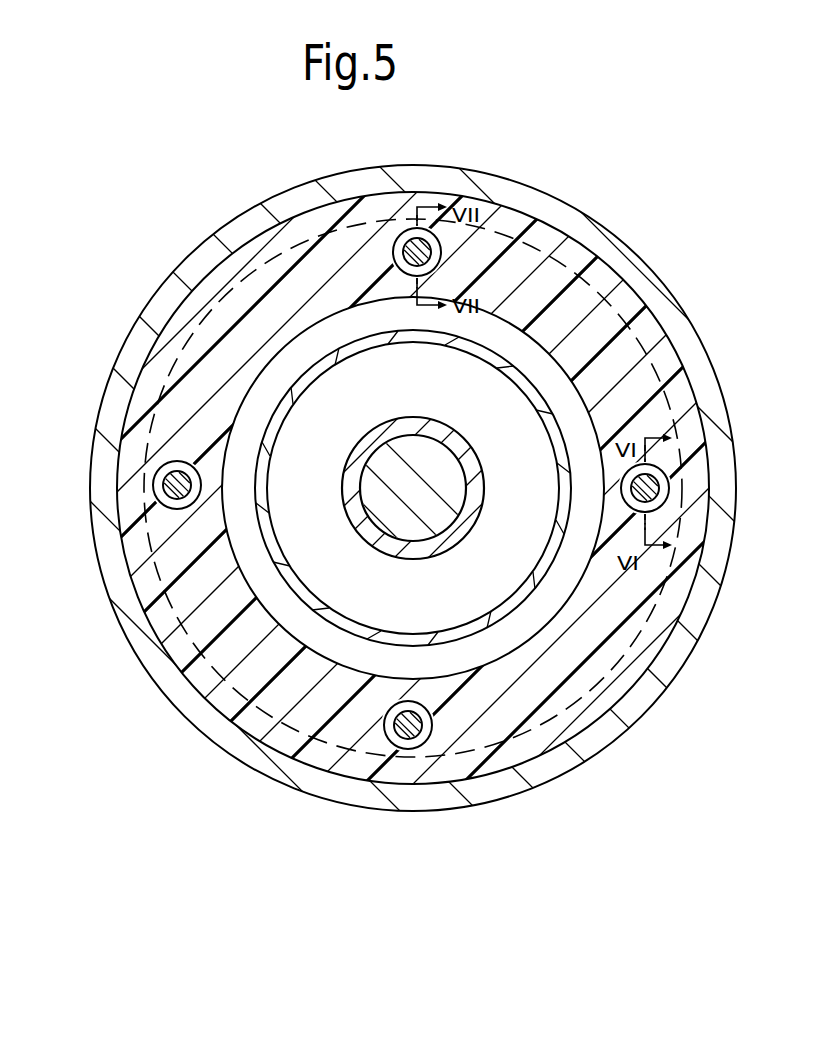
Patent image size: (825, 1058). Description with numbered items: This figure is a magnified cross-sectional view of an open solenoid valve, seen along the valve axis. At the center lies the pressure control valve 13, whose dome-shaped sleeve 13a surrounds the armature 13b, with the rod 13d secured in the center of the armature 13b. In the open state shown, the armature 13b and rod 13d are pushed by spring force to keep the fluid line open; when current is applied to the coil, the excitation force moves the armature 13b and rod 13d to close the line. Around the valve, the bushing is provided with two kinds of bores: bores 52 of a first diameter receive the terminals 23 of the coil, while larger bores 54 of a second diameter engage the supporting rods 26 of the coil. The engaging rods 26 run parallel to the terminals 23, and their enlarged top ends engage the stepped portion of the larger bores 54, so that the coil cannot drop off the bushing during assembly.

The pressure control valve 13 is at (593, 432).
The sleeve 13a is at (568, 447).
The armature 13b is at (467, 520).
The rod 13d is at (430, 517).
The terminals 23 is at (162, 482).
The engaging rods 26 is at (400, 241).
The first diameter bore 52 is at (182, 503).
The second diameter bore 54 is at (440, 263).